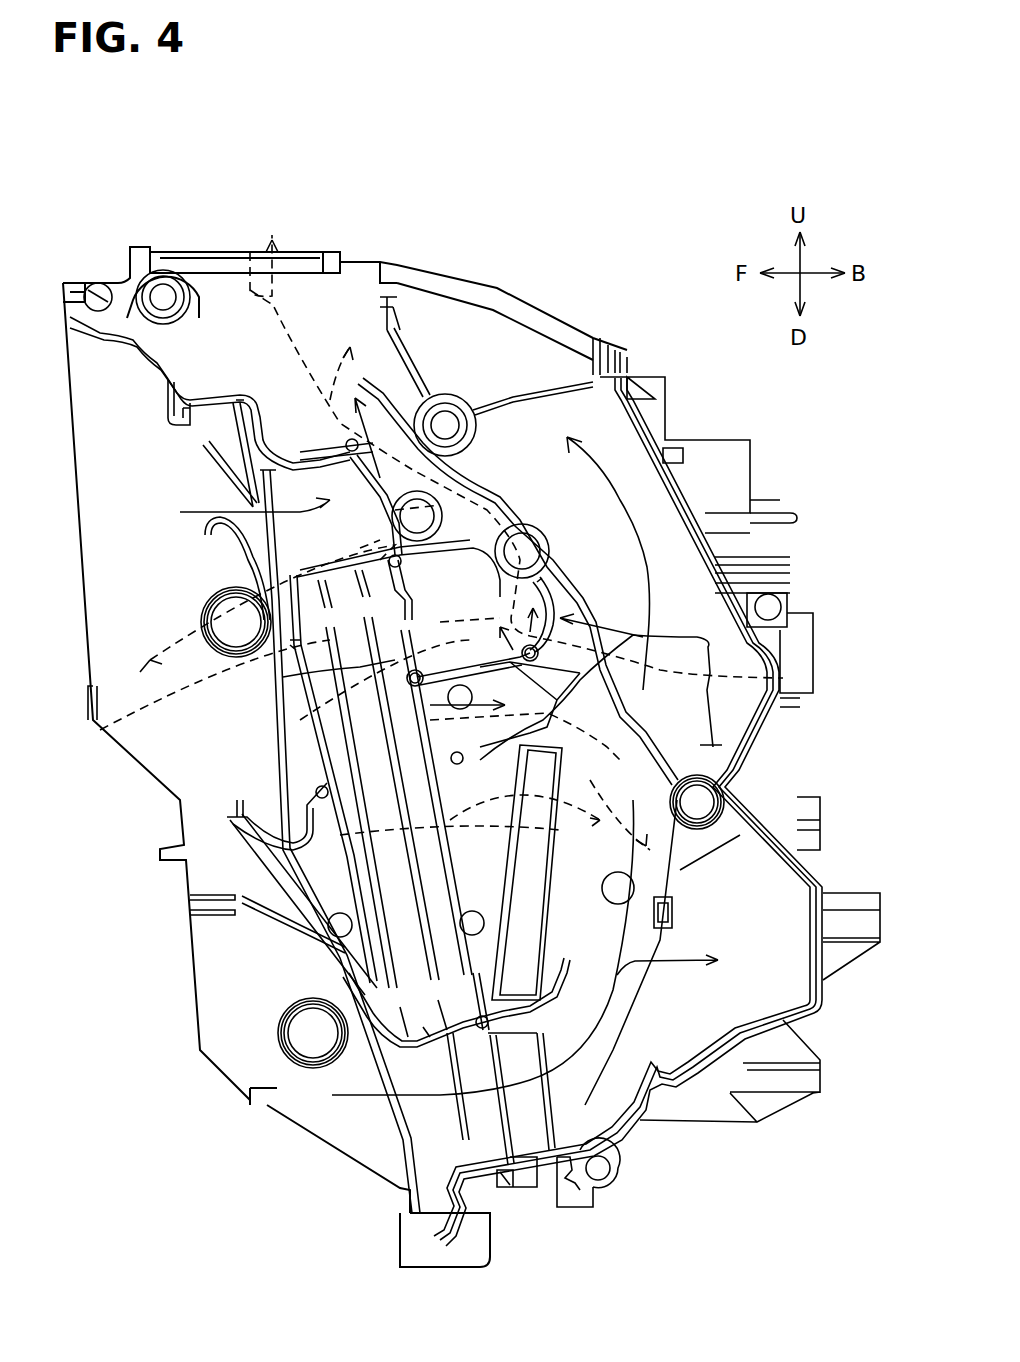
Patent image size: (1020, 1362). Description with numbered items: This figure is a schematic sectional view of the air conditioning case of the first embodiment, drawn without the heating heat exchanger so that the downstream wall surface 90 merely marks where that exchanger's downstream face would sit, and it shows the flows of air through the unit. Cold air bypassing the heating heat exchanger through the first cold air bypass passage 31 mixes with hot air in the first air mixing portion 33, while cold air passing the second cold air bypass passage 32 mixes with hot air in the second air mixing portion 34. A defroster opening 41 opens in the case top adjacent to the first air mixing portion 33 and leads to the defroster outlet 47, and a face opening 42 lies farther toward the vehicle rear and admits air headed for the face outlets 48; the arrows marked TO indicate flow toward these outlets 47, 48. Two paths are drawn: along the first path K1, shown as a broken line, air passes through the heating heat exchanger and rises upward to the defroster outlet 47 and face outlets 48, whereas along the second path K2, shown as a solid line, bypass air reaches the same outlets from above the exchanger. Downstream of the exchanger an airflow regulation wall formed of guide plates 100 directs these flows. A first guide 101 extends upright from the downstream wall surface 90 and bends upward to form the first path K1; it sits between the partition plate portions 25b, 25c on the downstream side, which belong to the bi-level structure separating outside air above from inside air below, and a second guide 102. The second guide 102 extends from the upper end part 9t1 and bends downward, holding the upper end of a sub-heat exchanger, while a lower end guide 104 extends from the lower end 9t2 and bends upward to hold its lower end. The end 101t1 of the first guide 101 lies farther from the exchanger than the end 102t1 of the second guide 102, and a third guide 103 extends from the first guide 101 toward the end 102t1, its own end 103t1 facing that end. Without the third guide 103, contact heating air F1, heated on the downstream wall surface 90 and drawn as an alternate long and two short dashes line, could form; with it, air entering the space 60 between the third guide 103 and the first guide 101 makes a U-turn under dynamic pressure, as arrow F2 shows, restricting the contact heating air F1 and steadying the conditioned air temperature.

The defroster outlet 47 is at (289, 216).
The flow direction TO is at (371, 234).
The first path K1 is at (252, 250).
The defroster opening 41 is at (303, 262).
The first air mixing portion 33 is at (397, 430).
The face outlets 48 is at (447, 427).
The second path K2 is at (477, 313).
The face opening 42 is at (583, 347).
The second guide 102 is at (575, 445).
The end of the second guide 102t1 is at (553, 537).
The end of the first guide 101t1 is at (573, 575).
The first guide 101 is at (580, 593).
The airflow regulation wall 100 is at (783, 645).
The arrow indicating U-turn of air F2 is at (783, 678).
The space 60 is at (600, 657).
The end of the third guide 103t1 is at (640, 712).
The third guide 103 is at (660, 735).
The first cold air bypass passage 31 is at (345, 462).
The upper end part of the heating heat exchanger 9t1 is at (380, 542).
The contact heating air F1 is at (157, 740).
The downstream wall surface 90 is at (410, 702).
The bracket 25b is at (267, 878).
The partition plate 25c is at (380, 903).
The second air mixing portion 34 is at (640, 937).
The lower end guide 104 is at (640, 1117).
The second cold air bypass passage 32 is at (503, 1173).
The lower end of the heating heat exchanger 9t2 is at (483, 1030).